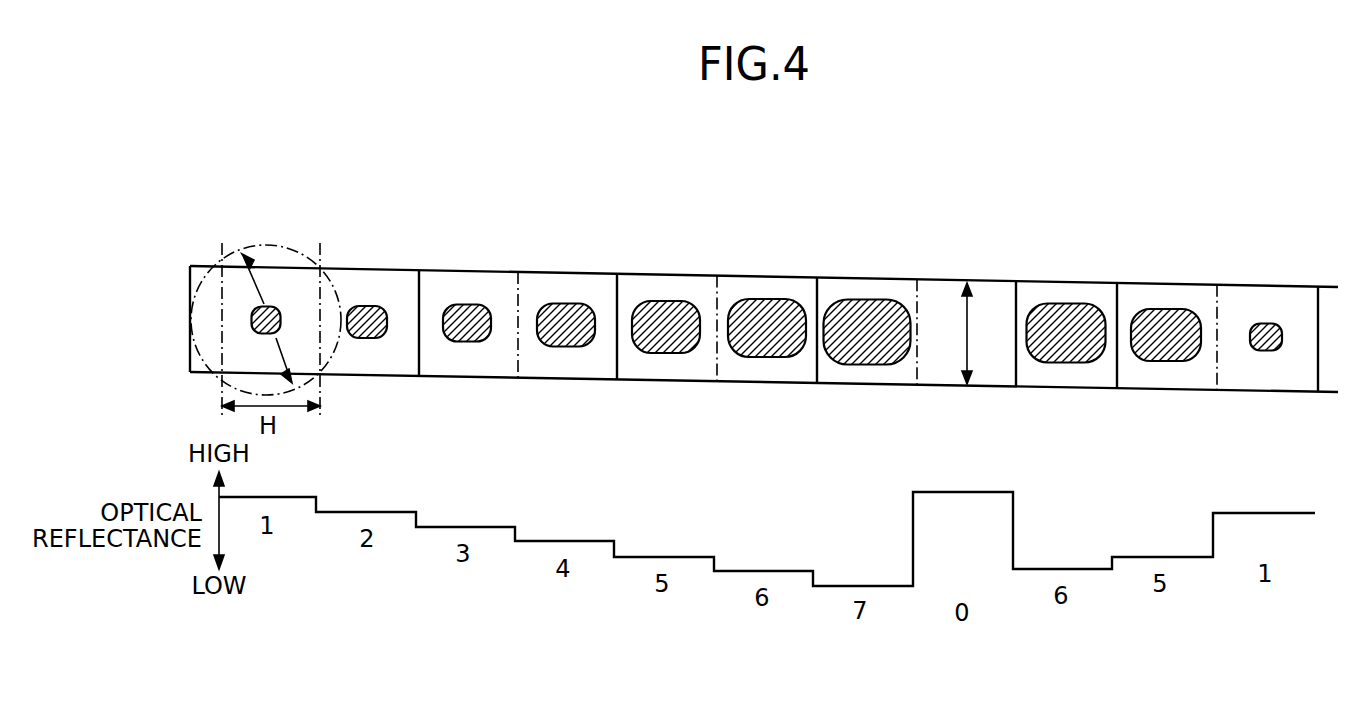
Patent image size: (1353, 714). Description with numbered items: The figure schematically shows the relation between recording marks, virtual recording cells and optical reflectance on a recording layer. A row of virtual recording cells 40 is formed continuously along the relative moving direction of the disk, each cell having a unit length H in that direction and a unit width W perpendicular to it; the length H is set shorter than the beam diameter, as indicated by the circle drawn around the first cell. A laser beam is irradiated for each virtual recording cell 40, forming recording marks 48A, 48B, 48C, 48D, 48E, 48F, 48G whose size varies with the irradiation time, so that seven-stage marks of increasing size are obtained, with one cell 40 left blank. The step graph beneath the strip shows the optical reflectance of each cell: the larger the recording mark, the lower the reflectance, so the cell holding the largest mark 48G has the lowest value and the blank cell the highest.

The virtual recording cell 40 is at (918, 271).
The recording mark 48A is at (263, 305).
The recording mark 48B is at (366, 305).
The recording mark 48C is at (466, 303).
The recording mark 48D is at (567, 302).
The recording mark 48E is at (669, 300).
The recording mark 48F is at (770, 298).
The recording mark 48G is at (870, 298).